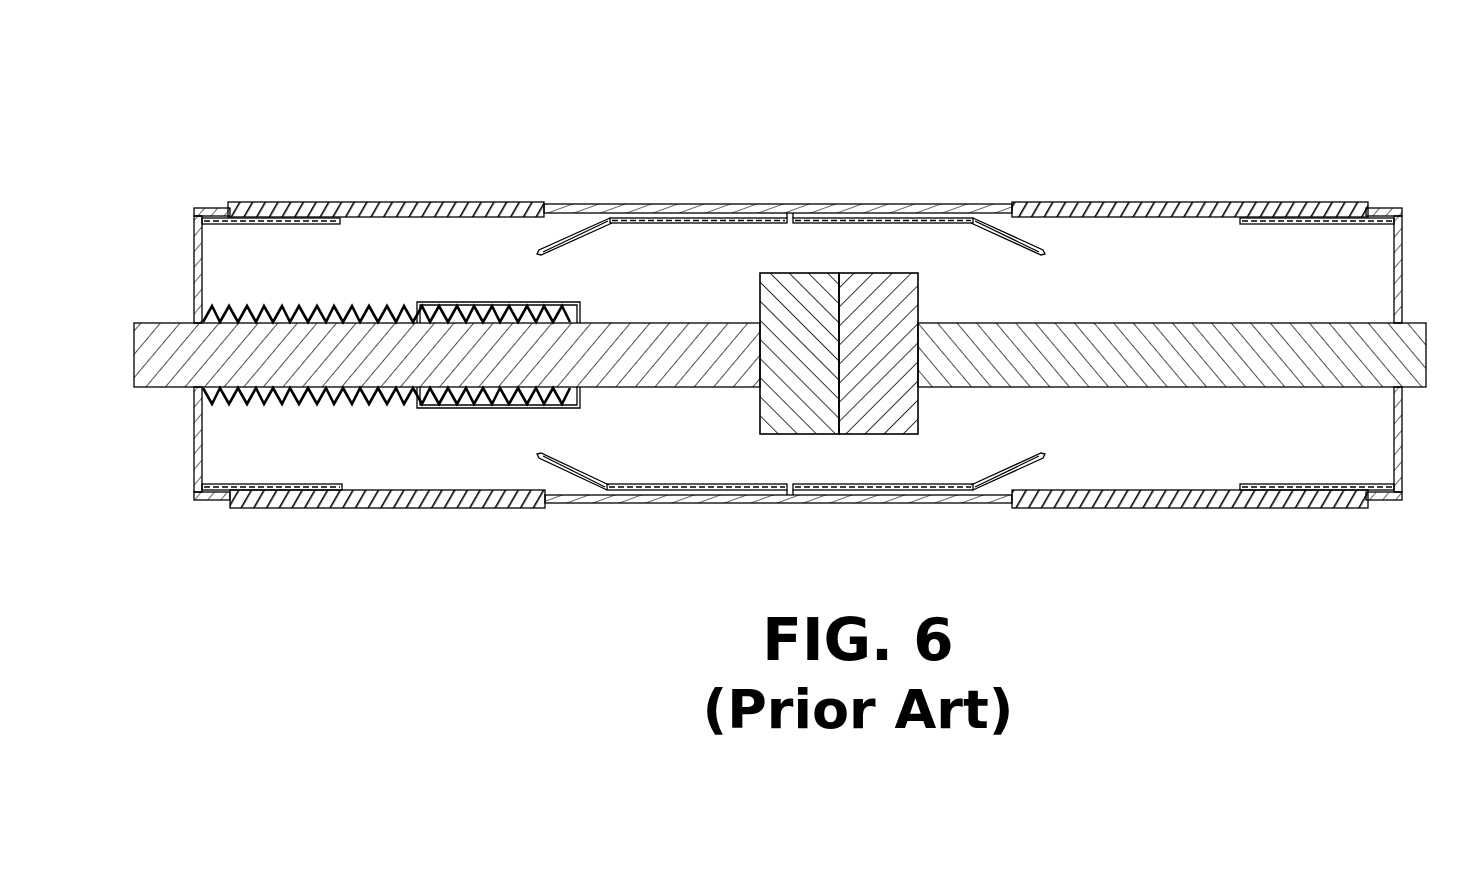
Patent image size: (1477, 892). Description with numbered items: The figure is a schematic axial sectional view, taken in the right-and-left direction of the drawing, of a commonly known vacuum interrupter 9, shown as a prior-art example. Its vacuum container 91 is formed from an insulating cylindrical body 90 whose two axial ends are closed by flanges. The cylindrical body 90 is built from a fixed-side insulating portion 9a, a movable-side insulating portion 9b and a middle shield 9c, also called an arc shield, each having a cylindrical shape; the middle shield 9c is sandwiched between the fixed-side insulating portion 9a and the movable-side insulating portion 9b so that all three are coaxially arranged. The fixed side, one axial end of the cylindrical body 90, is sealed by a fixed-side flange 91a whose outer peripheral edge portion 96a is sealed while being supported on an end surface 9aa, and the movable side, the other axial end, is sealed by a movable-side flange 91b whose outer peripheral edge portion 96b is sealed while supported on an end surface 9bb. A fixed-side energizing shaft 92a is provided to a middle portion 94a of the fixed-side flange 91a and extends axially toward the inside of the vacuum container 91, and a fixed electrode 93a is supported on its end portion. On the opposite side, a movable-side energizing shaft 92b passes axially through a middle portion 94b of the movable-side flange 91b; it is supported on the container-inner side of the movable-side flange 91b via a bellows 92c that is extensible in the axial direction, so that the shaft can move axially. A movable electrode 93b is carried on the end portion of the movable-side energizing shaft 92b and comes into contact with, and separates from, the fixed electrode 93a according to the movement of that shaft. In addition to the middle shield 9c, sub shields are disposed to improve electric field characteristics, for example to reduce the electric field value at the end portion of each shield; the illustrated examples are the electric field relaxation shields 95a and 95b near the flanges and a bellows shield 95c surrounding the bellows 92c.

The vacuum interrupter 9 is at (214, 529).
The insulating cylindrical body 90 is at (888, 58).
The fixed-side insulating portion 9a is at (1012, 203).
The movable-side insulating portion 9b is at (545, 203).
The middle shield 9c is at (786, 210).
The end surface 9aa is at (1368, 208).
The end surface 9bb is at (230, 208).
The vacuum container 91 is at (295, 529).
The fixed-side flange 91a is at (1403, 472).
The movable-side flange 91b is at (195, 487).
The fixed-side energizing shaft 92a is at (1136, 380).
The movable-side energizing shaft 92b is at (358, 372).
The bellows 92c is at (397, 393).
The fixed electrode 93a is at (874, 427).
The movable electrode 93b is at (800, 427).
The middle portion 94a is at (1403, 408).
The middle portion 94b is at (194, 405).
The electric field relaxation shield 95a is at (1235, 224).
The electric field relaxation shield 95b is at (300, 224).
The bellows shield 95c is at (495, 395).
The outer peripheral edge portion 96a is at (1395, 208).
The outer peripheral edge portion 96b is at (205, 208).